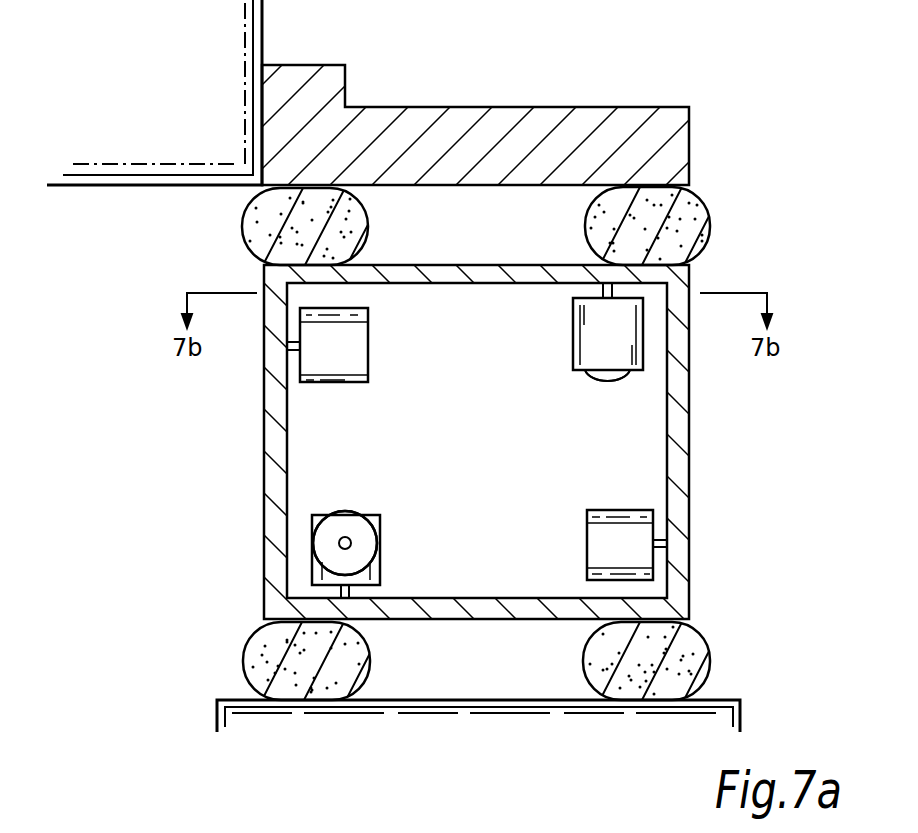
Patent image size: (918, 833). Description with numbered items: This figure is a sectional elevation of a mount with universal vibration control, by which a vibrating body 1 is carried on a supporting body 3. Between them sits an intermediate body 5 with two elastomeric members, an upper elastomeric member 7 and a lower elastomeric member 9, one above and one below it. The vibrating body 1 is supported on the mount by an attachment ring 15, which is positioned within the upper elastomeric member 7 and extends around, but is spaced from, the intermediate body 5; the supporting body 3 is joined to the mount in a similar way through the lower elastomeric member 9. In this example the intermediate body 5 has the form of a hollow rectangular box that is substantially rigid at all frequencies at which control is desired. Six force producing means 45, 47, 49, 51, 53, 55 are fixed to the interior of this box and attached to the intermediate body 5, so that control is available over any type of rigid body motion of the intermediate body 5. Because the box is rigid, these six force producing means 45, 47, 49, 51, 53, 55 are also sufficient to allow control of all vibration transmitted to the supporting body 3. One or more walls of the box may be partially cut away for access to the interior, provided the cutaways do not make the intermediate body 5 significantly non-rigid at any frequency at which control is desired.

The vibrating body 1 is at (166, 121).
The supporting body 3 is at (487, 747).
The intermediate body 5 is at (677, 457).
The upper elastomeric member 7 is at (350, 217).
The lower elastomeric member 9 is at (348, 660).
The attachment ring 15 is at (361, 133).
The force producing means 45 is at (352, 361).
The force producing means 47 is at (616, 357).
The force producing means 49 is at (630, 558).
The force producing means 51 is at (381, 521).
The force producing means 53 is at (341, 517).
The force producing means 55 is at (597, 384).